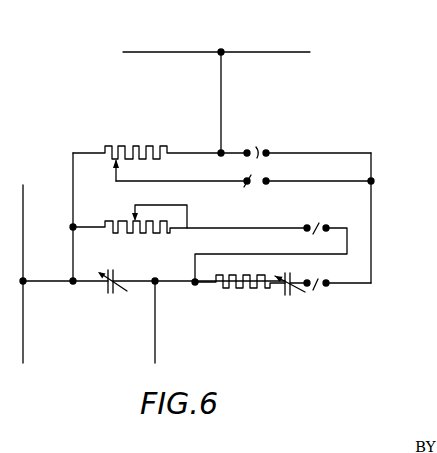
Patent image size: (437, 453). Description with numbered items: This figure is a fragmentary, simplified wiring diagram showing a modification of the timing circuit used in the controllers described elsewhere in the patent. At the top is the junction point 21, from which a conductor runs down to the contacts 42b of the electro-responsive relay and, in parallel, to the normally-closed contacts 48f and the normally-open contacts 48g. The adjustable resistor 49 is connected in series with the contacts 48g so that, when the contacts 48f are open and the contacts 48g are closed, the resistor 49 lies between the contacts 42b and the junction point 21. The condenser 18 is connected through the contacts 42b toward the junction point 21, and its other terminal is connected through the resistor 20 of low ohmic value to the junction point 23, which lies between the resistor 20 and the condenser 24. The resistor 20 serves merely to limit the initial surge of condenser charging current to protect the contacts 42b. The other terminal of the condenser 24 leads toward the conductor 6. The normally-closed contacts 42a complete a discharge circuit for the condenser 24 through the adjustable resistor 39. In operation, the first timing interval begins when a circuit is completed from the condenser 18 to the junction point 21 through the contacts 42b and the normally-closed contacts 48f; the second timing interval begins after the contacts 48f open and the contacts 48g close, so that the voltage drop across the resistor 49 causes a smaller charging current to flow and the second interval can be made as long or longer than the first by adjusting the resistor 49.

The junction point 21 is at (216, 92).
The adjustable resistor 49 is at (146, 149).
The normally-closed contacts 48f is at (257, 147).
The normally-open contacts 48g is at (243, 191).
The adjustable resistor 39 is at (130, 234).
The normally-closed contacts 42a is at (317, 228).
The junction point 23 is at (155, 280).
The condenser 24 is at (105, 289).
The condenser 18 is at (284, 273).
The resistor 20 is at (252, 290).
The contacts 42b is at (322, 289).
The conductor 6 is at (26, 342).